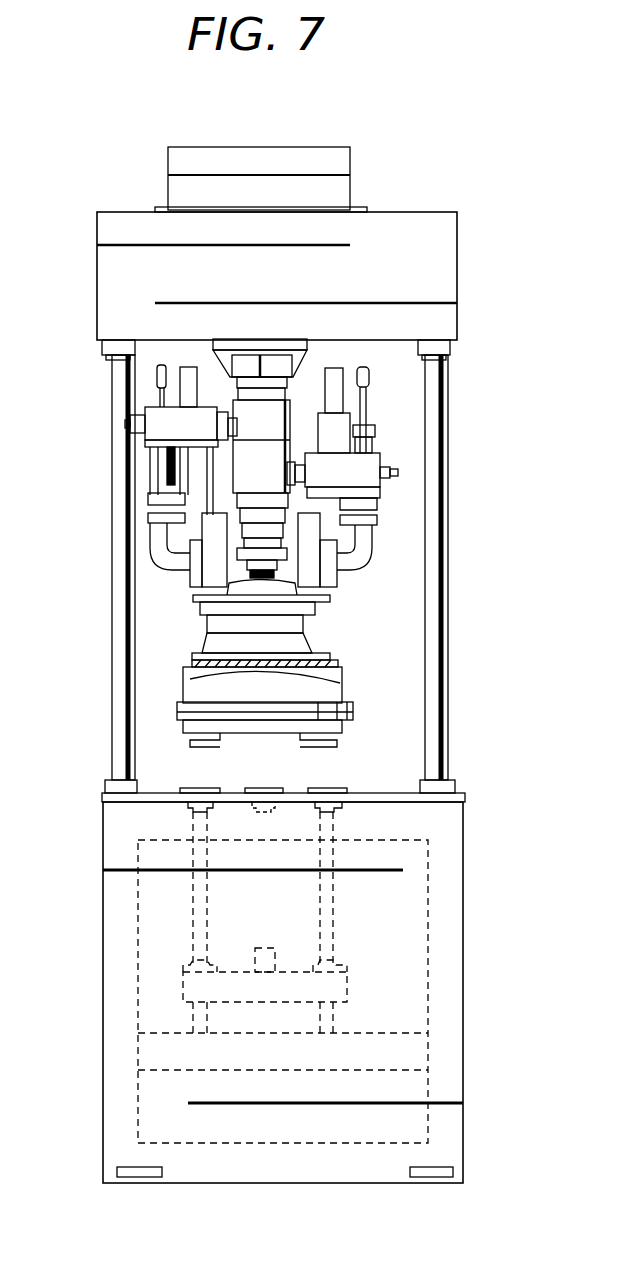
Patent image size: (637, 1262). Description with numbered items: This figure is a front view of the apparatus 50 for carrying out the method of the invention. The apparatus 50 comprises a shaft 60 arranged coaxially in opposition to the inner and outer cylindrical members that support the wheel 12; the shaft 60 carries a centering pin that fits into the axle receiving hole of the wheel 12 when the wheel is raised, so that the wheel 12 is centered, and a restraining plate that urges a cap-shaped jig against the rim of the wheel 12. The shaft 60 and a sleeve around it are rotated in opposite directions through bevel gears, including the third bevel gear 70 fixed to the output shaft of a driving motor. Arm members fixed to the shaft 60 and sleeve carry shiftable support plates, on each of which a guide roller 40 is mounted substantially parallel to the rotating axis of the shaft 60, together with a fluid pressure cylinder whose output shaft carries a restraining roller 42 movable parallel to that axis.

The apparatus 50 is at (136, 195).
The third bevel gear 70 is at (147, 411).
The shaft 60 is at (235, 470).
The restraining roller 42 is at (173, 567).
The guide roller 40 is at (207, 596).
The wheel 12 is at (207, 625).